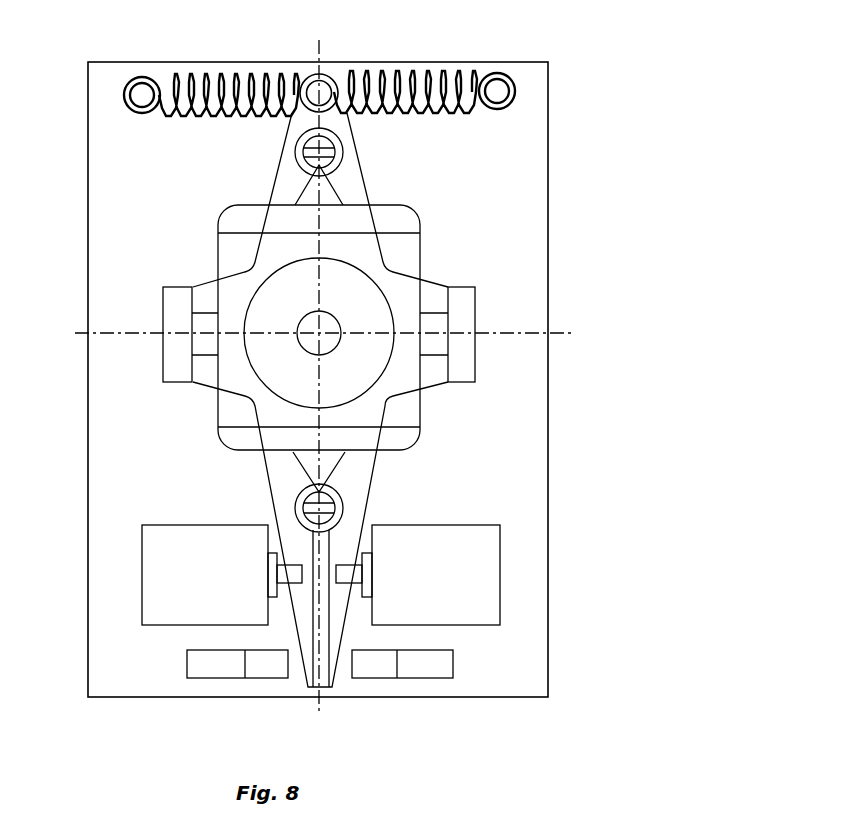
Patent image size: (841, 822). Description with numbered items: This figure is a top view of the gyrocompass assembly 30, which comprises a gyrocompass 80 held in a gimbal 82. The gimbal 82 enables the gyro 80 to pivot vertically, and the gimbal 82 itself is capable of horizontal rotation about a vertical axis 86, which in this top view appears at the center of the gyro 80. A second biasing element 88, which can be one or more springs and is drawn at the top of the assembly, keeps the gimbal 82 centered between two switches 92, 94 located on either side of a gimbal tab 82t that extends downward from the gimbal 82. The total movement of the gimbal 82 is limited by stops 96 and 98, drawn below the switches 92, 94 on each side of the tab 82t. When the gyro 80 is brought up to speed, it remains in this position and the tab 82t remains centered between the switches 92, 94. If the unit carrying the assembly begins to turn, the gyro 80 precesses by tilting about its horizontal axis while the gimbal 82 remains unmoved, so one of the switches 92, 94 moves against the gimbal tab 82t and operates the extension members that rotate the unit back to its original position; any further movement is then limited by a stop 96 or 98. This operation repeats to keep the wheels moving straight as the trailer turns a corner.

The gyrocompass assembly 30 is at (588, 210).
The gyrocompass 80 is at (422, 236).
The gimbal 82 is at (360, 152).
The gimbal tab 82t is at (325, 670).
The vertical axis 86 is at (330, 342).
The second biasing element 88 is at (196, 110).
The switch 92 is at (160, 595).
The switch 94 is at (483, 593).
The stop 96 is at (258, 672).
The stop 98 is at (440, 672).